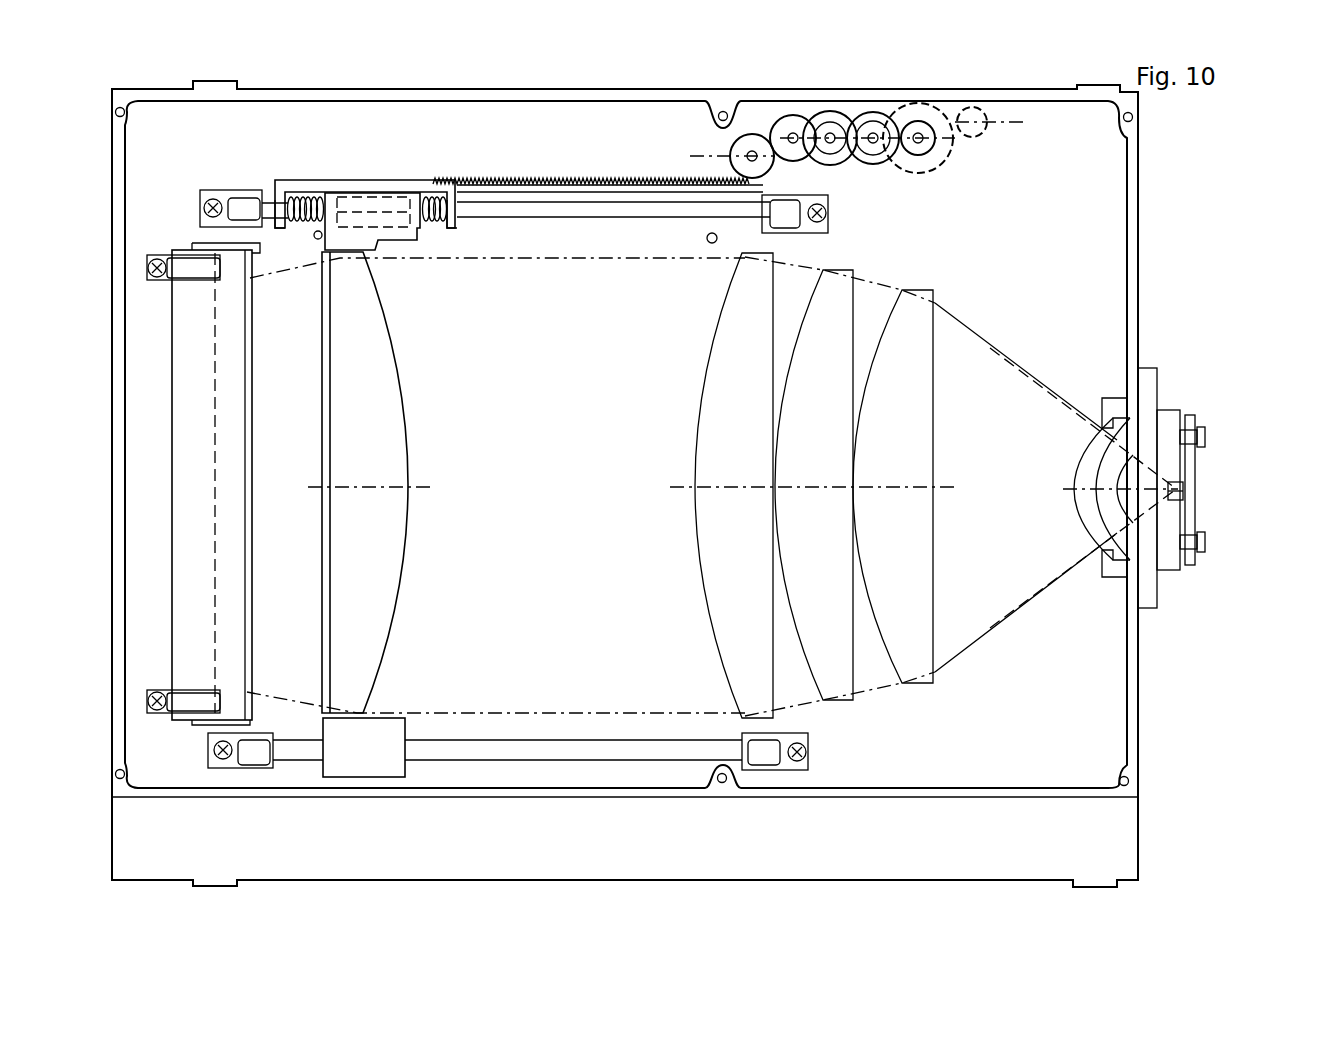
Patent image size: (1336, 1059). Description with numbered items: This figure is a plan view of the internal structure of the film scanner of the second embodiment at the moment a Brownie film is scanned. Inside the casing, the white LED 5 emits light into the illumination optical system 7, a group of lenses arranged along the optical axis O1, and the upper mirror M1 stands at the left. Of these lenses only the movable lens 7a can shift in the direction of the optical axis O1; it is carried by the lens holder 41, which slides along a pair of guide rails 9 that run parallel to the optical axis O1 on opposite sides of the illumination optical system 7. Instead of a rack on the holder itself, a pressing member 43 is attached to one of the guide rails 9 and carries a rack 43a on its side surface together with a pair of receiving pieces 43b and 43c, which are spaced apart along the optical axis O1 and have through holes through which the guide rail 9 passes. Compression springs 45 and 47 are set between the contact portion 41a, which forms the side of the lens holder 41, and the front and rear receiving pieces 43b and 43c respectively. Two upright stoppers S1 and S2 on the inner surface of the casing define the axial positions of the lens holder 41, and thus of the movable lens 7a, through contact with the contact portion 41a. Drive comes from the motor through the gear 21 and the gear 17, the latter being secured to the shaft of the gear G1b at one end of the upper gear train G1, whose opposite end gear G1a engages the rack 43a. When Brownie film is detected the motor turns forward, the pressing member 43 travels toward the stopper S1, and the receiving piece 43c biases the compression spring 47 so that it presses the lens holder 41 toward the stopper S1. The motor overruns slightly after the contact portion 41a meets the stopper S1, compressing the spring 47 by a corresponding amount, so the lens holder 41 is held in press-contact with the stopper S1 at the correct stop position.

The white LED 5 is at (1185, 490).
The illumination optical system 7 is at (905, 268).
The movable lens 7a is at (373, 400).
The guide rails 9 is at (570, 212).
The gear 17 is at (940, 170).
The gear 21 is at (985, 135).
The lens holder 41 is at (385, 733).
The contact portion 41a is at (417, 232).
The pressing member 43 is at (612, 194).
The rack 43a is at (518, 176).
The receiving piece 43b is at (280, 230).
The receiving piece 43c is at (450, 228).
The compression spring 45 is at (310, 197).
The compression spring 47 is at (425, 193).
The upper gear train G1 is at (858, 182).
The gear G1a is at (737, 150).
The gear G1b is at (920, 130).
The upper mirror M1 is at (195, 403).
The optical axis O1 is at (760, 485).
The stopper S1 is at (316, 240).
The stopper S2 is at (711, 243).